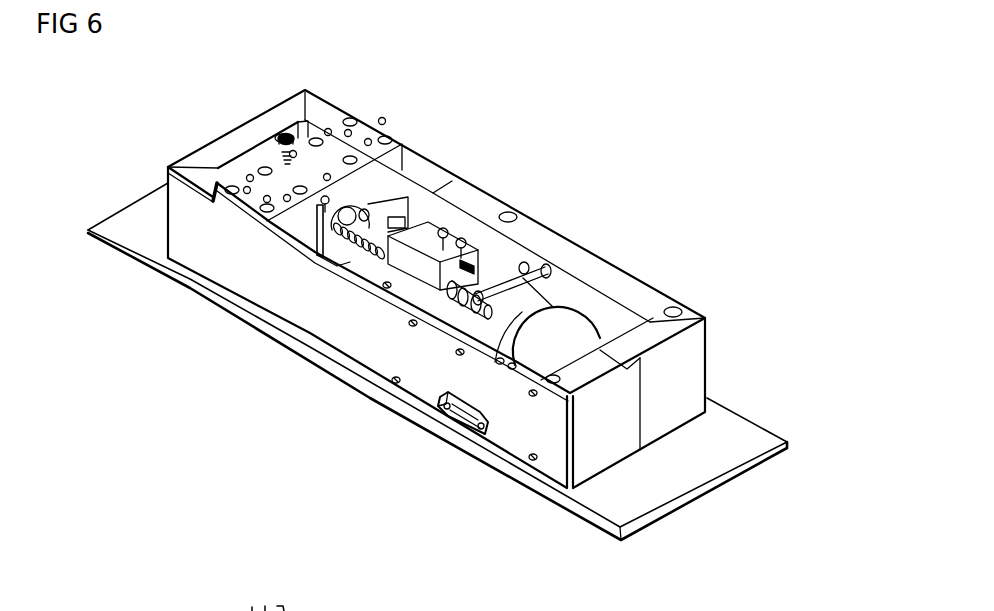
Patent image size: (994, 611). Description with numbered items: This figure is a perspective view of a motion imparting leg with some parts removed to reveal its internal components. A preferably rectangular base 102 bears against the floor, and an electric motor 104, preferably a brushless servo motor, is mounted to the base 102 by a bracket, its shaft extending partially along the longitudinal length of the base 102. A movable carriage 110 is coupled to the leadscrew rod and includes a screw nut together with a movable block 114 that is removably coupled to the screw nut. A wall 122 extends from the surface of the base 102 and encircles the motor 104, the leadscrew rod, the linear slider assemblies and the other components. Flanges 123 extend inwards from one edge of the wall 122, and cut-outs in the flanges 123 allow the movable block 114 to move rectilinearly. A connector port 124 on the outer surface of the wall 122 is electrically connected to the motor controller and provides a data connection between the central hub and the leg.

The base 102 is at (637, 505).
The electric motor 104 is at (578, 336).
The movable carriage 110 is at (279, 135).
The movable block 114 is at (339, 157).
The wall 122 is at (318, 320).
The flanges 123 is at (530, 178).
The connector port 124 is at (437, 407).